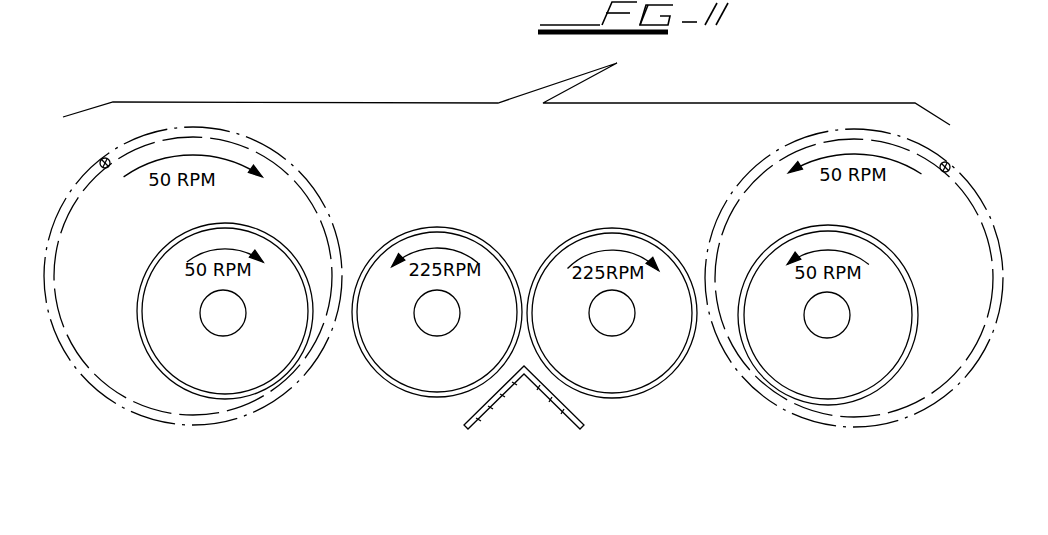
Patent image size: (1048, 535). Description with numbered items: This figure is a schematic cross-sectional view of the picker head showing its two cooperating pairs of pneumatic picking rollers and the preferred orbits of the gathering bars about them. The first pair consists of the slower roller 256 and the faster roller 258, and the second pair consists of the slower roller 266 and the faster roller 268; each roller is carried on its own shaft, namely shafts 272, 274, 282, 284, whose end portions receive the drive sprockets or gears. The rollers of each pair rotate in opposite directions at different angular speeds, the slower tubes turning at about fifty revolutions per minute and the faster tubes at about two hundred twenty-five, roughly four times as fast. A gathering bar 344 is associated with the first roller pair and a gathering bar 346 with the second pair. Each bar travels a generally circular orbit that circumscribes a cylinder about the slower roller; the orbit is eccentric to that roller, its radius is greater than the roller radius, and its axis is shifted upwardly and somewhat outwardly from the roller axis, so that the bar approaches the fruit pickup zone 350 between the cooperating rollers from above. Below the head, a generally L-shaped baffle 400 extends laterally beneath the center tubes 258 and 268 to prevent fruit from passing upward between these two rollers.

The roller 256 is at (163, 252).
The roller 258 is at (492, 250).
The roller 266 is at (907, 273).
The roller 268 is at (626, 232).
The shaft 272 is at (223, 313).
The shaft 274 is at (432, 320).
The shaft 282 is at (825, 315).
The shaft 284 is at (610, 313).
The gathering bar 344 is at (104, 157).
The gathering bar 346 is at (949, 163).
The fruit pickup zone 350 is at (315, 248).
The baffle 400 is at (492, 402).